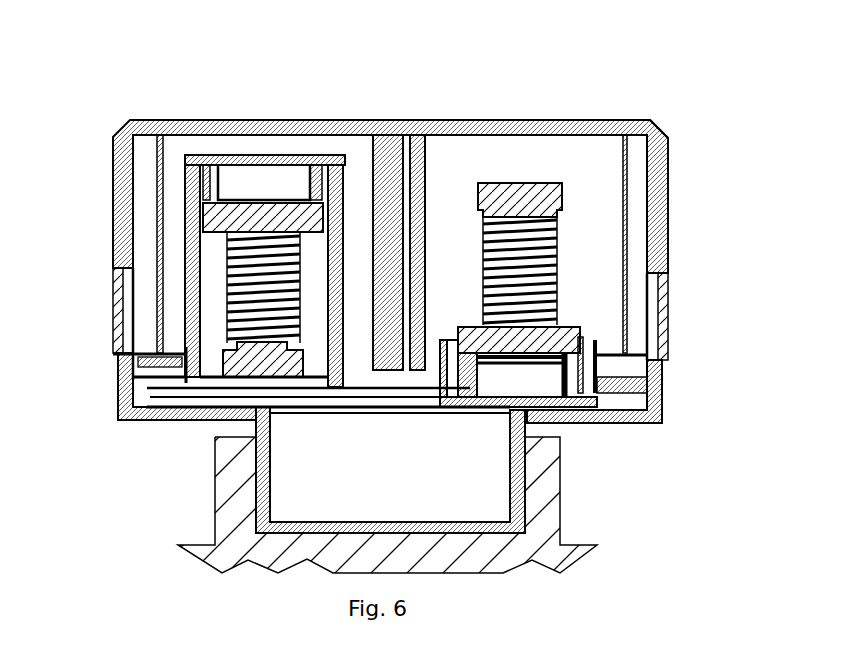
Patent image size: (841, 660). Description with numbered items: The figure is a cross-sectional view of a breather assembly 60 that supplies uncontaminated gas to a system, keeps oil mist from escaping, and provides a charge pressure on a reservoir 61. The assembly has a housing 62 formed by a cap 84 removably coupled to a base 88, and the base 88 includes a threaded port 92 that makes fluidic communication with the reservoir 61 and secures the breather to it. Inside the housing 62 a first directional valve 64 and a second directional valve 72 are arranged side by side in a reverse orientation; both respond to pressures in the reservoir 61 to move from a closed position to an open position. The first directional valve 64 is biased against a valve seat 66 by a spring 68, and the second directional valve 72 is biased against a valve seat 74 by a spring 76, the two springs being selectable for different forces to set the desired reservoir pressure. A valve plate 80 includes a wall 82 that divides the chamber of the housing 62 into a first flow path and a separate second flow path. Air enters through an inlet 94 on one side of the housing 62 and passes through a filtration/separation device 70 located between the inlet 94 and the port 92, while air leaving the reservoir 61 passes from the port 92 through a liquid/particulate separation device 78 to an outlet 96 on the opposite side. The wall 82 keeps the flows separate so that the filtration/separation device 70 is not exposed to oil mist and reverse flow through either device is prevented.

The breather assembly 60 is at (80, 117).
The reservoir 61 is at (197, 543).
The housing 62 is at (234, 106).
The first directional valve 64 is at (197, 203).
The valve seat 66 is at (322, 162).
The spring 68 is at (233, 278).
The filtration/separation device 70 is at (147, 217).
The second directional valve 72 is at (578, 318).
The valve seat 74 is at (570, 410).
The spring 76 is at (555, 245).
The liquid/particulate separation device 78 is at (640, 191).
The valve plate 80 is at (118, 412).
The wall 82 is at (398, 132).
The cap 84 is at (652, 127).
The base 88 is at (186, 430).
The port 92 is at (518, 500).
The inlet 94 is at (132, 353).
The outlet 96 is at (665, 360).